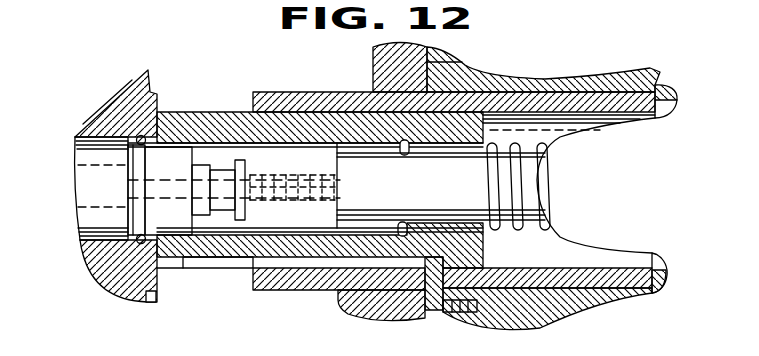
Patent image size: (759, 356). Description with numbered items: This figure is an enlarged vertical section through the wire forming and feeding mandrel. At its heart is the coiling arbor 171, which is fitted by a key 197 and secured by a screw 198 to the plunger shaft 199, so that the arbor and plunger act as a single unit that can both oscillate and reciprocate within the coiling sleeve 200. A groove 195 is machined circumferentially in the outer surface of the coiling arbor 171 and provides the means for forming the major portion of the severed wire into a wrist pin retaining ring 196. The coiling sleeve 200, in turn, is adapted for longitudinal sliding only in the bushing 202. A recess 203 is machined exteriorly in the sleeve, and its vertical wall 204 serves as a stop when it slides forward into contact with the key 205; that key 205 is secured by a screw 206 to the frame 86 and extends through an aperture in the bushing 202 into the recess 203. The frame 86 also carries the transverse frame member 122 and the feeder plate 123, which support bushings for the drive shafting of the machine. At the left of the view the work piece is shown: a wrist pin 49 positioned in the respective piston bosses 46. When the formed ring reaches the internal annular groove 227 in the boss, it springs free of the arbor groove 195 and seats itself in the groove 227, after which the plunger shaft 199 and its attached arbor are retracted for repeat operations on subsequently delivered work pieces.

The piston boss 46 is at (86, 127).
The wrist pin 49 is at (80, 176).
The frame 86 is at (606, 300).
The transverse frame member 122 is at (636, 86).
The feeder plate 123 is at (373, 65).
The coiling arbor 171 is at (171, 230).
The groove 195 is at (136, 217).
The wrist pin retaining ring 196 is at (144, 238).
The key 197 is at (235, 173).
The screw 198 is at (318, 190).
The plunger shaft 199 is at (293, 147).
The coiling sleeve 200 is at (210, 112).
The bushing 202 is at (296, 287).
The recess 203 is at (231, 262).
The vertical wall 204 is at (460, 264).
The key 205 is at (428, 302).
The screw 206 is at (456, 313).
The internal annular groove 227 is at (125, 283).